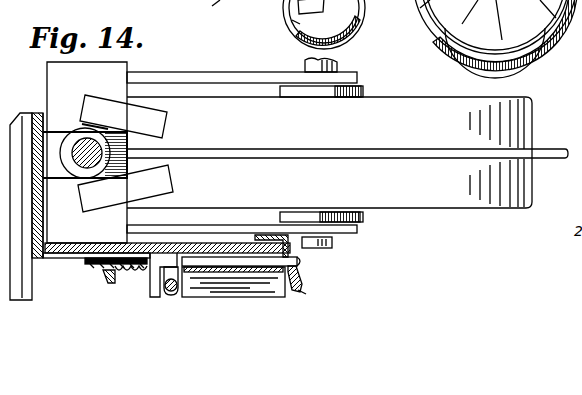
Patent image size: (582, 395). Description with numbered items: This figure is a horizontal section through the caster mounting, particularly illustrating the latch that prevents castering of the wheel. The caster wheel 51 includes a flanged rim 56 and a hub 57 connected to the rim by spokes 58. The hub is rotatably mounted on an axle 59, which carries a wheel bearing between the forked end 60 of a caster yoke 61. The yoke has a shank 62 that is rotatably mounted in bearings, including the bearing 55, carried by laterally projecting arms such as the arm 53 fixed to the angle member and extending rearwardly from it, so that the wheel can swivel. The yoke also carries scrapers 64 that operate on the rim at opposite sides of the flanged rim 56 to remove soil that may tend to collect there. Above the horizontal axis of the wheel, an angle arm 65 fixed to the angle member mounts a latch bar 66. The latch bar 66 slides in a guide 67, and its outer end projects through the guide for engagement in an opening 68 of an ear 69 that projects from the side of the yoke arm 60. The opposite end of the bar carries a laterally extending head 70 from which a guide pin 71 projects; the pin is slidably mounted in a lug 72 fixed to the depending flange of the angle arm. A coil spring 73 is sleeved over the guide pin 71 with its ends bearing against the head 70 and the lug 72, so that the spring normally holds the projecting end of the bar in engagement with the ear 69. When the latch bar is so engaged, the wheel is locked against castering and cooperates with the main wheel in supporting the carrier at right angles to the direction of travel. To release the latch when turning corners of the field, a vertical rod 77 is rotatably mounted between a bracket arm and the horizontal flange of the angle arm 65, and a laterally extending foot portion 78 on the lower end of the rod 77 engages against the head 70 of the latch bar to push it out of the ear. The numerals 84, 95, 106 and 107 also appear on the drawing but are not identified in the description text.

The caster wheel 51 is at (474, 206).
The laterally projecting arm 53 is at (48, 114).
The bearing 55 is at (70, 132).
The flanged rim 56 is at (533, 119).
The hub 57 is at (364, 220).
The spokes 58 is at (512, 15).
The axle 59 is at (330, 63).
The forked end 60 is at (297, 72).
The caster yoke 61 is at (127, 75).
The shank 62 is at (93, 178).
The scrapers 64 is at (166, 123).
The angle arm 65 is at (240, 243).
The latch bar 66 is at (303, 261).
The guide 67 is at (262, 275).
The opening 68 is at (306, 270).
The ear 69 is at (306, 294).
The head 70 is at (146, 290).
The guide pin 71 is at (92, 265).
The lug 72 is at (104, 280).
The coil spring 73 is at (132, 276).
The vertical rod 77 is at (175, 291).
The foot portion 78 is at (172, 268).
The wall 84 is at (26, 284).
The element 95 is at (214, 2).
The dial 106 is at (292, 2).
The dial knob 107 is at (292, 20).